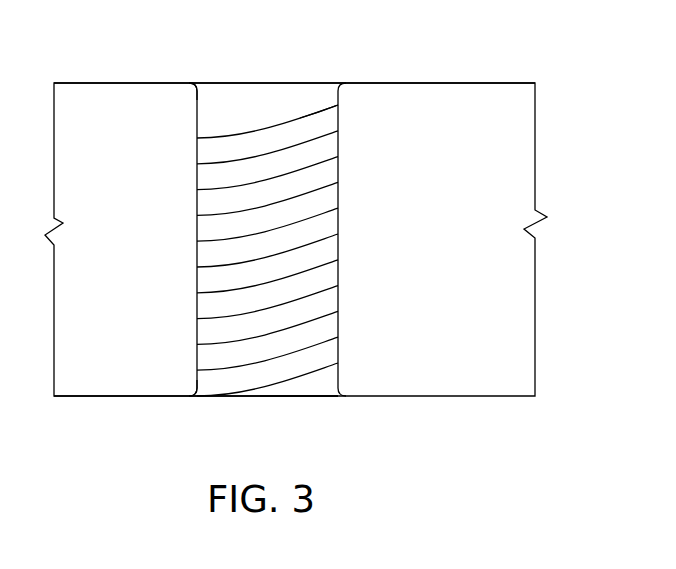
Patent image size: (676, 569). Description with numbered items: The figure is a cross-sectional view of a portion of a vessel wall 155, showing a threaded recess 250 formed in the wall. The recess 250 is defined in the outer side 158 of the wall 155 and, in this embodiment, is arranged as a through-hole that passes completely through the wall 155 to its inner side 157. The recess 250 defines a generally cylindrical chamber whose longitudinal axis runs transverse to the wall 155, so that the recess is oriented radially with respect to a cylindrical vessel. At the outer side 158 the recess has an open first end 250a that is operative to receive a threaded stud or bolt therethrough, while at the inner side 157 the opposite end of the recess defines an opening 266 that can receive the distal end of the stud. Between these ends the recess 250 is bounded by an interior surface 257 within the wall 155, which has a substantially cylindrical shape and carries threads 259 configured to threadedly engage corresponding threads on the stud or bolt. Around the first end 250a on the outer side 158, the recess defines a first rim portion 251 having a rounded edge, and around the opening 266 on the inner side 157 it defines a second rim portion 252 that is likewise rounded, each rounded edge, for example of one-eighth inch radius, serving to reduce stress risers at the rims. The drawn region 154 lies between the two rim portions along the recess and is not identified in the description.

The threaded recess 250 is at (510, 51).
The first end of recess 250a is at (328, 118).
The first rim portion 251 is at (188, 91).
The second rim portion 252 is at (196, 391).
The interior surface 257 is at (339, 246).
The threads 259 is at (215, 214).
The opening 266 is at (296, 398).
The channel 154 is at (270, 432).
The wall 155 is at (149, 311).
The inner side 157 is at (148, 398).
The outer side 158 is at (128, 83).